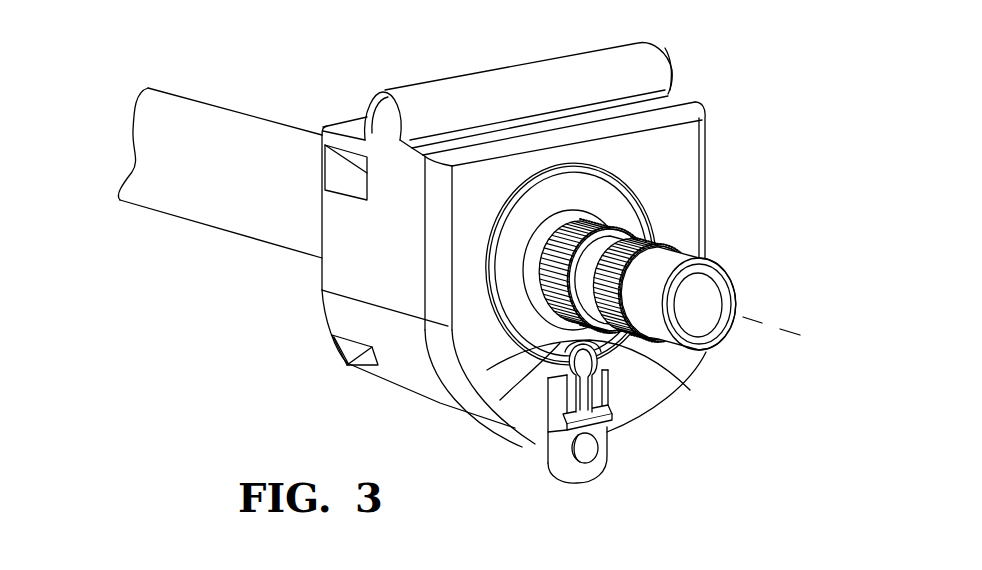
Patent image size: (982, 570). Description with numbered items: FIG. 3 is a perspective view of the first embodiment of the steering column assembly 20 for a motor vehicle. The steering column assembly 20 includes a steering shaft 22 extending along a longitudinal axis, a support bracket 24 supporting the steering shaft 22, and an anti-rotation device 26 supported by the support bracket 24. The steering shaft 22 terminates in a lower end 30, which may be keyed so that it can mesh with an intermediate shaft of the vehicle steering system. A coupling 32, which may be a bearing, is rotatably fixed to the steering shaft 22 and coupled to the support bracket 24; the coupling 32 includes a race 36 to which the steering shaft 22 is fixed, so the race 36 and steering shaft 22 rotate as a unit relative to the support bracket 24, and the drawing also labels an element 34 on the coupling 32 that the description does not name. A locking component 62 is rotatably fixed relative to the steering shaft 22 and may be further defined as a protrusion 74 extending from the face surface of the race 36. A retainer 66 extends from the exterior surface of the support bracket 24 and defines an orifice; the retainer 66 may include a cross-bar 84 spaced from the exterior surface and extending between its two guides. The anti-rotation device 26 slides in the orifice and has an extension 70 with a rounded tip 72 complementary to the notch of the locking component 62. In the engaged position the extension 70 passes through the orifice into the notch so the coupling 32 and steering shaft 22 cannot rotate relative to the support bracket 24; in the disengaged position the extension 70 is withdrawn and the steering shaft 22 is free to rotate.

The steering column assembly 20 is at (180, 383).
The steering shaft 22 is at (238, 125).
The support bracket 24 is at (673, 141).
The anti-rotation device 26 is at (558, 474).
The lower end 30 is at (708, 292).
The coupling 32 is at (661, 292).
The flange 34 is at (521, 244).
The race 36 is at (513, 316).
The locking component 62 is at (548, 378).
The retainer 66 is at (612, 409).
The extension 70 is at (640, 345).
The tip 72 is at (487, 370).
The protrusion 74 is at (500, 400).
The cross-bar 84 is at (600, 421).